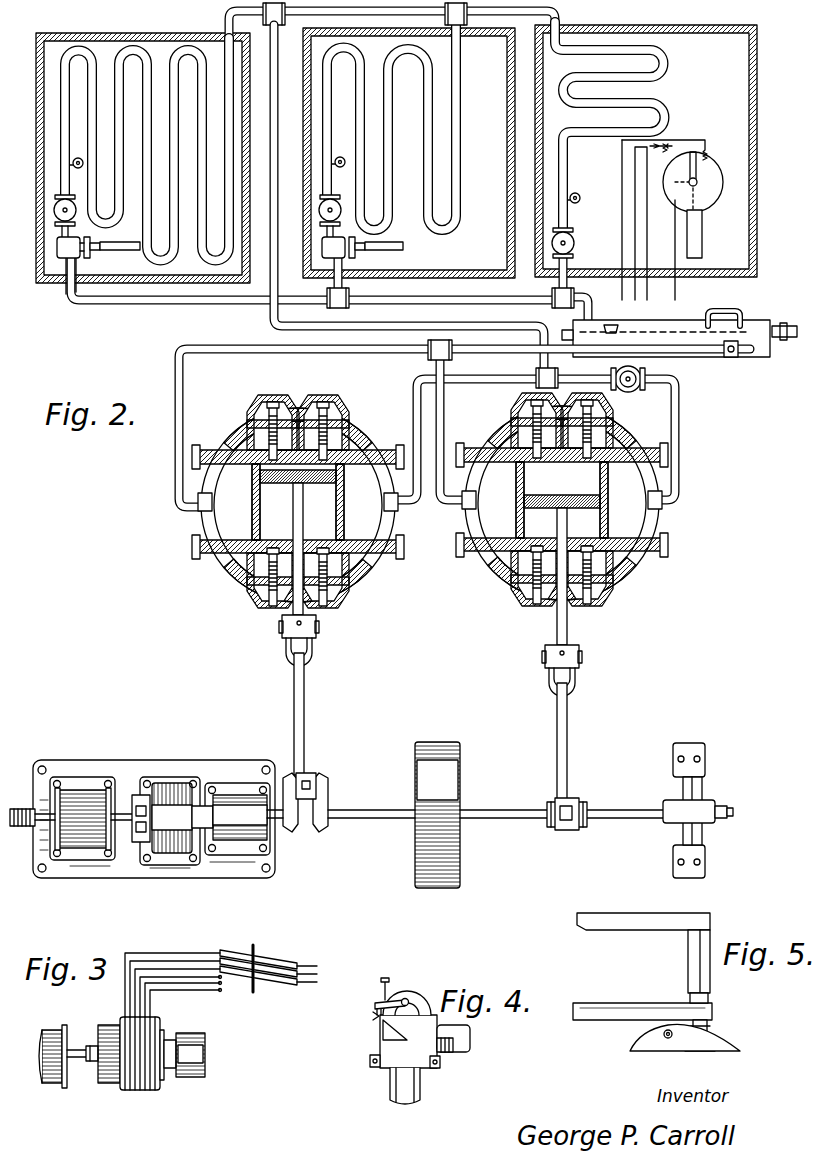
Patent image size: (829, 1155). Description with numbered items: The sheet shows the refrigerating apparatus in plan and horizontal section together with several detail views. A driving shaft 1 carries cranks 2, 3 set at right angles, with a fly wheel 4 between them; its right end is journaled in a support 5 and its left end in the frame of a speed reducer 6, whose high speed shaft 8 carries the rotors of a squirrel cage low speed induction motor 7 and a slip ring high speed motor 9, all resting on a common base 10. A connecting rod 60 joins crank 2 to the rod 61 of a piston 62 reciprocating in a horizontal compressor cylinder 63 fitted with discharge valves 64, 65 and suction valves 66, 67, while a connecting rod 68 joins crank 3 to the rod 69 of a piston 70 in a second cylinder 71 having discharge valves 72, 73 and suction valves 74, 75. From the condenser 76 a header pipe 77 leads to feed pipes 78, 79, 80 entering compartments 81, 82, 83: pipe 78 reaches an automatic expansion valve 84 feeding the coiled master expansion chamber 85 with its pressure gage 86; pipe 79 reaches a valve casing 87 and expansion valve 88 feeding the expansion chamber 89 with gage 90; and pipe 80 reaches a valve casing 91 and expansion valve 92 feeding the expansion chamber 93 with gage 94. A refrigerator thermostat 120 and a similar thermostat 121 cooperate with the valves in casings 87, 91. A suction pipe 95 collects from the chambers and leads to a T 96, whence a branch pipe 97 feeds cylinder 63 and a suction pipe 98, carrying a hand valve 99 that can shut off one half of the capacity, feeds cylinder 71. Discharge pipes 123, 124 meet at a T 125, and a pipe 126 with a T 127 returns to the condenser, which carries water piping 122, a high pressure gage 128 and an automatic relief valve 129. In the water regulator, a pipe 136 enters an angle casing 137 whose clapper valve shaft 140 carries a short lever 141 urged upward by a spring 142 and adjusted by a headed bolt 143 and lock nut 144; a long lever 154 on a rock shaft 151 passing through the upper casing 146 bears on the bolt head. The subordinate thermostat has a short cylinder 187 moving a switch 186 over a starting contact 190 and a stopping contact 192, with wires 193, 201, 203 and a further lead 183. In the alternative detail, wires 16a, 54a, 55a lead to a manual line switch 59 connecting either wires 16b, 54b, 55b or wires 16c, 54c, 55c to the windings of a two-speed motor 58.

In FIG. 2, the driving shaft 1 is at (362, 812).
In FIG. 2, the crank 2 is at (327, 800).
In FIG. 2, the crank 3 is at (584, 804).
In FIG. 2, the fly wheel 4 is at (452, 782).
In FIG. 2, the support 5 is at (703, 792).
In FIG. 2, the speed reducer 6 is at (228, 800).
In FIG. 3, the speed reducer 6 is at (203, 1047).
In FIG. 2, the three phase squirrel cage low speed induction motor 7 is at (168, 790).
In FIG. 2, the high speed shaft 8 is at (133, 795).
In FIG. 3, the high speed shaft 8 is at (88, 1046).
In FIG. 2, the three phase slip ring induction high speed motor 9 is at (83, 800).
In FIG. 3, the three phase slip ring induction high speed motor 9 is at (52, 1078).
In FIG. 2, the common base 10 is at (58, 760).
In FIG. 2, the connecting rod 60 is at (305, 705).
In FIG. 2, the piston rod 61 is at (304, 505).
In FIG. 2, the piston 62 is at (290, 484).
In FIG. 2, the horizontal compressor cylinder 63 is at (338, 507).
In FIG. 2, the discharge valve 64 is at (269, 455).
In FIG. 2, the discharge valve 65 is at (273, 548).
In FIG. 2, the suction valve 66 is at (327, 455).
In FIG. 2, the suction valve 67 is at (323, 548).
In FIG. 2, the connecting rod 68 is at (568, 745).
In FIG. 2, the piston rod 69 is at (568, 635).
In FIG. 2, the piston 70 is at (548, 508).
In FIG. 2, the second horizontal compressor cylinder 71 is at (600, 512).
In FIG. 2, the discharge valve 72 is at (535, 547).
In FIG. 2, the discharge valve 73 is at (537, 461).
In FIG. 2, the suction valve 74 is at (590, 547).
In FIG. 2, the suction valve 75 is at (587, 461).
In FIG. 2, the condenser 76 is at (683, 322).
In FIG. 2, the header pipe 77 is at (178, 304).
In FIG. 2, the feed pipe 78 is at (575, 290).
In FIG. 2, the feed pipe 79 is at (349, 292).
In FIG. 2, the feed pipe 80 is at (77, 269).
In FIG. 2, the compartment 81 is at (757, 142).
In FIG. 2, the compartment 82 is at (512, 175).
In FIG. 2, the compartment 83 is at (38, 132).
In FIG. 2, the automatic expansion valve 84 is at (574, 249).
In FIG. 2, the master expansion chamber 85 is at (668, 68).
In FIG. 2, the pressure gage 86 is at (577, 192).
In FIG. 2, the valve casing 87 is at (347, 255).
In FIG. 2, the automatic expansion valve 88 is at (339, 203).
In FIG. 2, the expansion chamber 89 is at (460, 140).
In FIG. 2, the pressure gage 90 is at (341, 156).
In FIG. 2, the valve casing 91 is at (57, 249).
In FIG. 2, the automatic expansion valve 92 is at (54, 210).
In FIG. 2, the expansion chamber 93 is at (118, 145).
In FIG. 2, the pressure gage 94 is at (78, 157).
In FIG. 2, the suction pipe 95 is at (271, 318).
In FIG. 2, the T 96 is at (551, 378).
In FIG. 2, the branch pipe 97 is at (412, 415).
In FIG. 2, the suction pipe 98 is at (681, 437).
In FIG. 2, the hand valve 99 is at (628, 392).
In FIG. 2, the refrigerator thermostat 120 is at (400, 247).
In FIG. 2, the thermostat 121 is at (122, 251).
In FIG. 2, the water piping 122 is at (566, 330).
In FIG. 4, the water piping 122 is at (392, 1086).
In FIG. 2, the discharge pipe 123 is at (175, 450).
In FIG. 2, the discharge pipe 124 is at (446, 415).
In FIG. 2, the T 125 is at (428, 355).
In FIG. 2, the pipe 126 is at (470, 354).
In FIG. 2, the T 127 is at (730, 358).
In FIG. 2, the high pressure gage 128 is at (619, 328).
In FIG. 2, the automatic relief valve 129 is at (785, 323).
In FIG. 4, the horizontal pipe 136 is at (455, 1046).
In FIG. 4, the angle casing 137 is at (405, 1041).
In FIG. 4, the shaft 140 is at (414, 997).
In FIG. 4, the short lever 141 is at (374, 1008).
In FIG. 4, the light compression spring 142 is at (375, 1016).
In FIG. 4, the headed bolt 143 is at (388, 980).
In FIG. 4, the lock nut 144 is at (377, 1002).
In FIG. 5, the upper casing 146 is at (636, 1040).
In FIG. 5, the rock shaft 151 is at (710, 1032).
In FIG. 5, the long lever 154 is at (612, 1008).
In FIG. 2, the wire 183 is at (675, 256).
In FIG. 2, the switch 186 is at (698, 171).
In FIG. 2, the short cylinder 187 is at (702, 238).
In FIG. 2, the high temperature starting contact 190 is at (712, 198).
In FIG. 2, the low temperature stopping contact 192 is at (670, 150).
In FIG. 2, the wire 193 is at (682, 140).
In FIG. 2, the wire 201 is at (621, 185).
In FIG. 2, the wire 203 is at (634, 214).
In FIG. 3, the wire 16a is at (306, 964).
In FIG. 3, the wire 16b is at (135, 953).
In FIG. 3, the wire 16c is at (222, 979).
In FIG. 3, the wire 54a is at (315, 973).
In FIG. 3, the wire 54b is at (170, 961).
In FIG. 3, the wire 54c is at (222, 985).
In FIG. 3, the wire 55a is at (308, 985).
In FIG. 3, the wire 55b is at (200, 969).
In FIG. 3, the wire 55c is at (181, 991).
In FIG. 3, the two-speed three phase squirrel cage induction motor 58 is at (139, 1090).
In FIG. 3, the three member manually operated line switch 59 is at (272, 955).